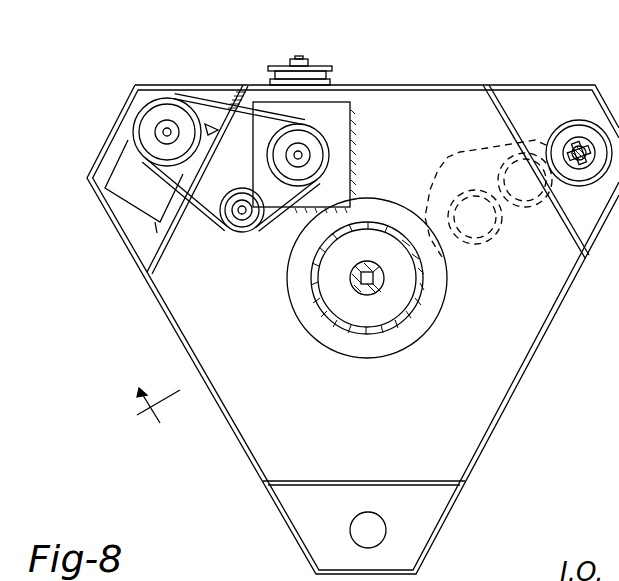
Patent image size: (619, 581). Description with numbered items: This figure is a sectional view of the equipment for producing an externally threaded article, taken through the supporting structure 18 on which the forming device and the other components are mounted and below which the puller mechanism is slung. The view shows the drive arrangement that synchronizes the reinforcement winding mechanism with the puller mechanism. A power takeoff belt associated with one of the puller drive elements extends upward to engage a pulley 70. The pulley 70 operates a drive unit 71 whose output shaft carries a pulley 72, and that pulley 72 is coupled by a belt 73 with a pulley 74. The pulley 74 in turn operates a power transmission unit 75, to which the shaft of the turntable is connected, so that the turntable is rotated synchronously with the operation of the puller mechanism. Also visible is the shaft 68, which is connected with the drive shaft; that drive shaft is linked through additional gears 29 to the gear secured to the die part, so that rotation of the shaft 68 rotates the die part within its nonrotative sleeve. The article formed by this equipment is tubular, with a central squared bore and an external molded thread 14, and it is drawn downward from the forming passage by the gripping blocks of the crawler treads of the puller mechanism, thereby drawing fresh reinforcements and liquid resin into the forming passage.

The external molded thread 14 is at (362, 295).
The supporting structure 18 is at (540, 344).
The additional gears 29 is at (480, 160).
The shaft 68 is at (565, 148).
The pulley 70 is at (328, 66).
The drive unit 71 is at (351, 112).
The pulley 72 is at (317, 153).
The belt 73 is at (183, 213).
The pulley 74 is at (172, 112).
The power transmission unit 75 is at (124, 167).